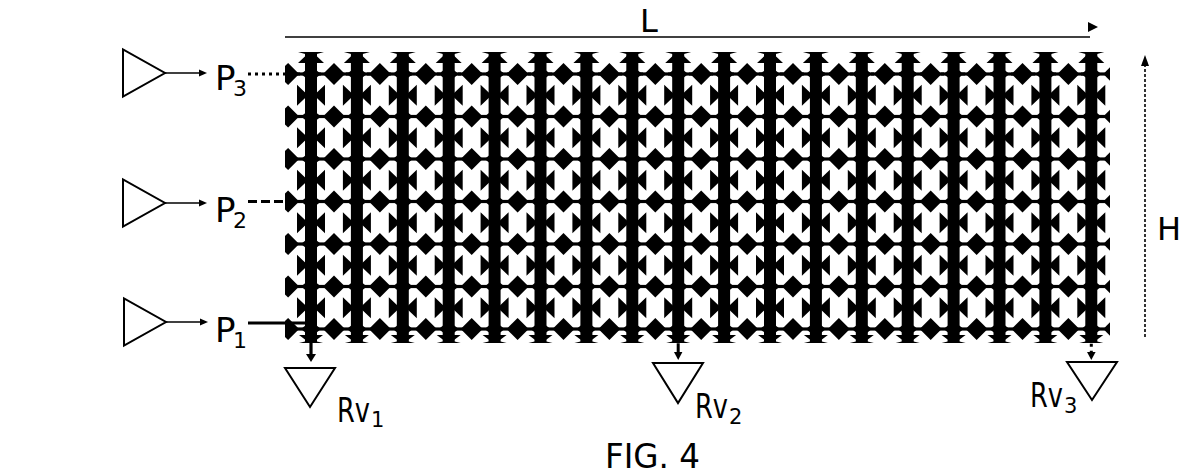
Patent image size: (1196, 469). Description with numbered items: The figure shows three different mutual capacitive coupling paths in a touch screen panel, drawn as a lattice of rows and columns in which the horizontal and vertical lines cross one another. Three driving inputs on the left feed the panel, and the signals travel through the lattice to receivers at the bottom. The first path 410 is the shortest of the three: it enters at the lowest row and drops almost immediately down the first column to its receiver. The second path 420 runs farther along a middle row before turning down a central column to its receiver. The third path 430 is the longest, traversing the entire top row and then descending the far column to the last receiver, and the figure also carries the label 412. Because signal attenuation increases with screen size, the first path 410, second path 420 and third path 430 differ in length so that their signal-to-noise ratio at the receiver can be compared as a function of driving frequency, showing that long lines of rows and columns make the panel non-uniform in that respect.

The path P1 410 is at (272, 330).
The path P2 420 is at (268, 206).
The path P3 430 is at (268, 78).
The lattice array 412 is at (723, 260).